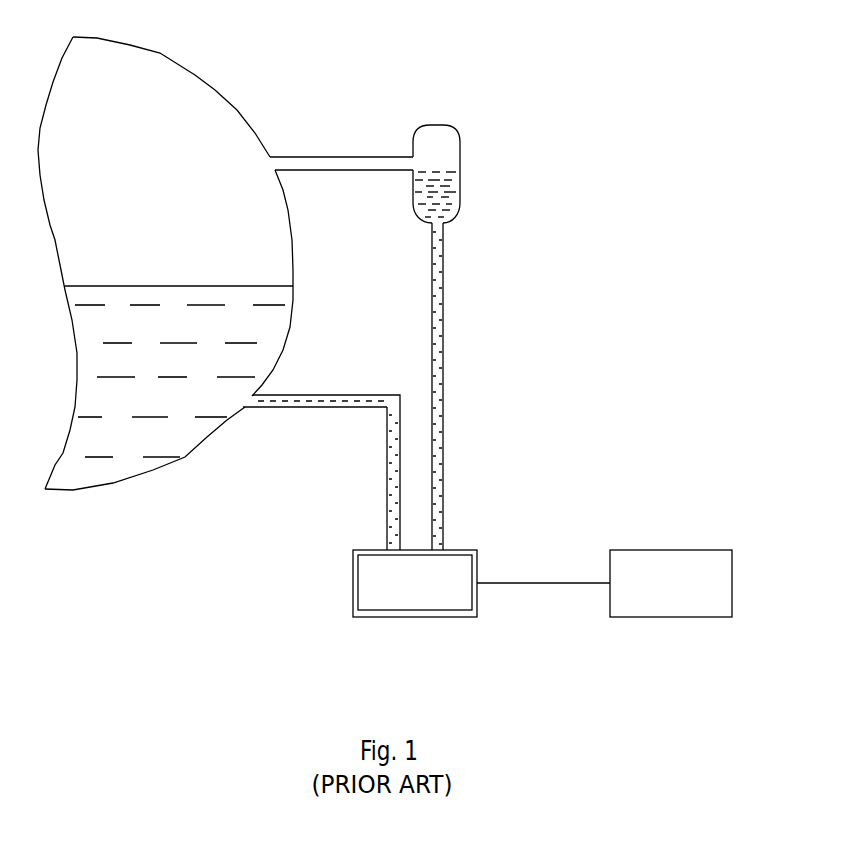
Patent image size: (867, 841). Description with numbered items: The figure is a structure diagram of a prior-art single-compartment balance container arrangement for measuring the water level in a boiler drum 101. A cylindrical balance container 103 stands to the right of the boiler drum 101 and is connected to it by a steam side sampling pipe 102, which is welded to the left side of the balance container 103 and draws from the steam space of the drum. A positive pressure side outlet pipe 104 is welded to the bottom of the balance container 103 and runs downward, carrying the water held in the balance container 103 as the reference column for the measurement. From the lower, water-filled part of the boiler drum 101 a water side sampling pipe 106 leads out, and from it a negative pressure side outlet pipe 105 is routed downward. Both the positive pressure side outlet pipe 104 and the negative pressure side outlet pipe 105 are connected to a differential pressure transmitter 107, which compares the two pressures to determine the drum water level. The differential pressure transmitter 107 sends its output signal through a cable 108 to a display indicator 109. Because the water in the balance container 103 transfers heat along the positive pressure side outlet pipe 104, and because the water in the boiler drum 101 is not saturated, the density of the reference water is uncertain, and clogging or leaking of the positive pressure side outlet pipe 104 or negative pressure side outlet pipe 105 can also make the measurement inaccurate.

The boiler drum 101 is at (195, 125).
The steam side sampling pipe 102 is at (353, 157).
The cylindrical balance container 103 is at (457, 125).
The positive pressure side outlet pipe 104 is at (443, 448).
The negative pressure side outlet pipe 105 is at (387, 455).
The water side sampling pipe 106 is at (305, 408).
The differential pressure transmitter 107 is at (425, 617).
The cable 108 is at (555, 583).
The display indicator 109 is at (720, 617).